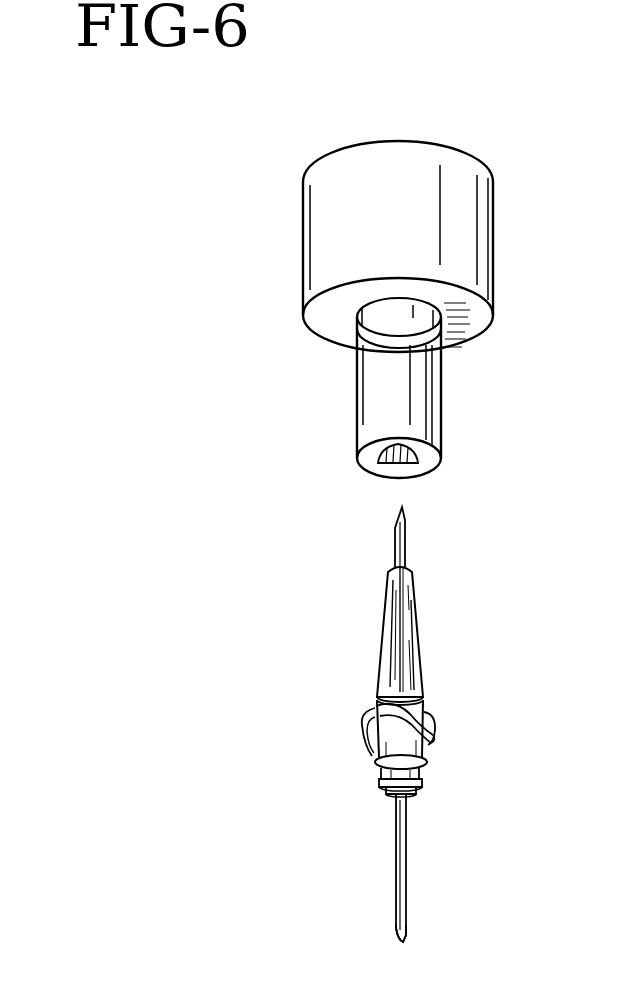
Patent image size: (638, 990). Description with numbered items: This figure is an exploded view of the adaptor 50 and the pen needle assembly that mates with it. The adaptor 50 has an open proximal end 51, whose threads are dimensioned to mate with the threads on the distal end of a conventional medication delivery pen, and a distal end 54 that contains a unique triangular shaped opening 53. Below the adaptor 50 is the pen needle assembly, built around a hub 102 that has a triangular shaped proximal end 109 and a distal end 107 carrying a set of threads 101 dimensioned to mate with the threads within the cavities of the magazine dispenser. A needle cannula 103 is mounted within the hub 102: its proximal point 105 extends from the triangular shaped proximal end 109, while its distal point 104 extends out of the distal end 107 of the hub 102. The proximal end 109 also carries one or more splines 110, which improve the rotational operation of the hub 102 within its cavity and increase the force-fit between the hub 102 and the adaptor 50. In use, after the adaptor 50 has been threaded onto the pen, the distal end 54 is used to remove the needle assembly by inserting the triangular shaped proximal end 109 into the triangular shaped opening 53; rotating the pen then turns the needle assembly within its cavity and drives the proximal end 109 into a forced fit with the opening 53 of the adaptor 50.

The adaptor 50 is at (419, 289).
The open proximal end 51 is at (470, 153).
The triangular shaped opening 53 is at (380, 463).
The distal end 54 is at (362, 428).
The set of threads 101 is at (432, 714).
The hub 102 is at (387, 688).
The needle cannula 103 is at (407, 862).
The distal point 104 is at (405, 938).
The proximal point 105 is at (402, 518).
The distal end 107 is at (428, 765).
The triangular shaped proximal end 109 is at (412, 634).
The splines 110 is at (401, 662).